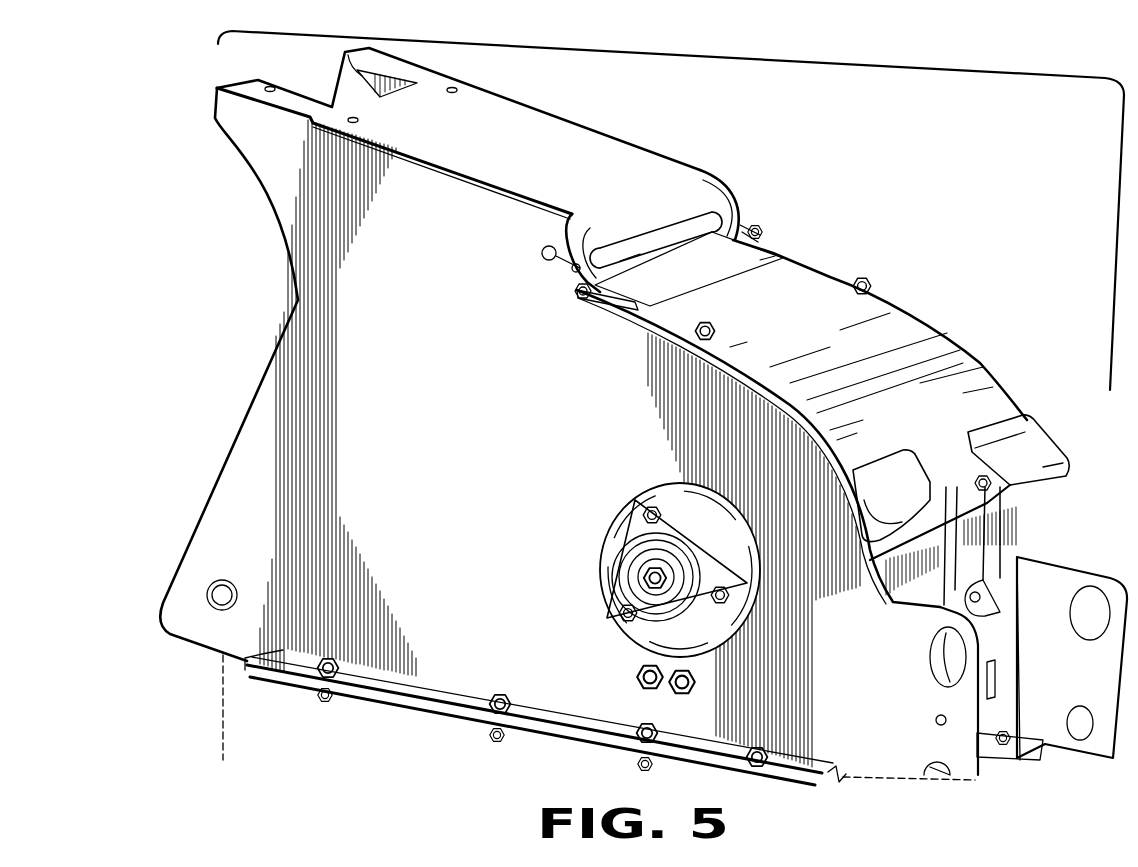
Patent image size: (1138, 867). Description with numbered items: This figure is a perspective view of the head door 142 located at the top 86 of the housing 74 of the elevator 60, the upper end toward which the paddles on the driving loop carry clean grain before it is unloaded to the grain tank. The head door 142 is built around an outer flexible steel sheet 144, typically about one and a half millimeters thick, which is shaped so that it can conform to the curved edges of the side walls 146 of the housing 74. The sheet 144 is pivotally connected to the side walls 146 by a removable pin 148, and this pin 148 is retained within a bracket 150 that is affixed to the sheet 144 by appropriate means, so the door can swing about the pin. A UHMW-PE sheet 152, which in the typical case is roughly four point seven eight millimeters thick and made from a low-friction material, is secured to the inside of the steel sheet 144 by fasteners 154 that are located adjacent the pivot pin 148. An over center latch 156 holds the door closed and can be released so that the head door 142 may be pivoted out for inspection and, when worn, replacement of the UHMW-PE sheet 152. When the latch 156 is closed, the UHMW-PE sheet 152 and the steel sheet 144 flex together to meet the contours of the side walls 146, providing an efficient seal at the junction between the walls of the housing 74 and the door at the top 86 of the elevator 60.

The top 86 is at (652, 53).
The side walls 146 is at (455, 222).
The removable pin 148 is at (567, 270).
The bracket 150 is at (528, 133).
The head door 142 is at (826, 316).
The outer flexible steel sheet 144 is at (913, 343).
The over center latch 156 is at (1028, 462).
The fasteners 154 is at (590, 300).
The UHMW-PE sheet 152 is at (790, 392).
The elevator 60 is at (943, 826).
The housing 74 is at (1031, 697).